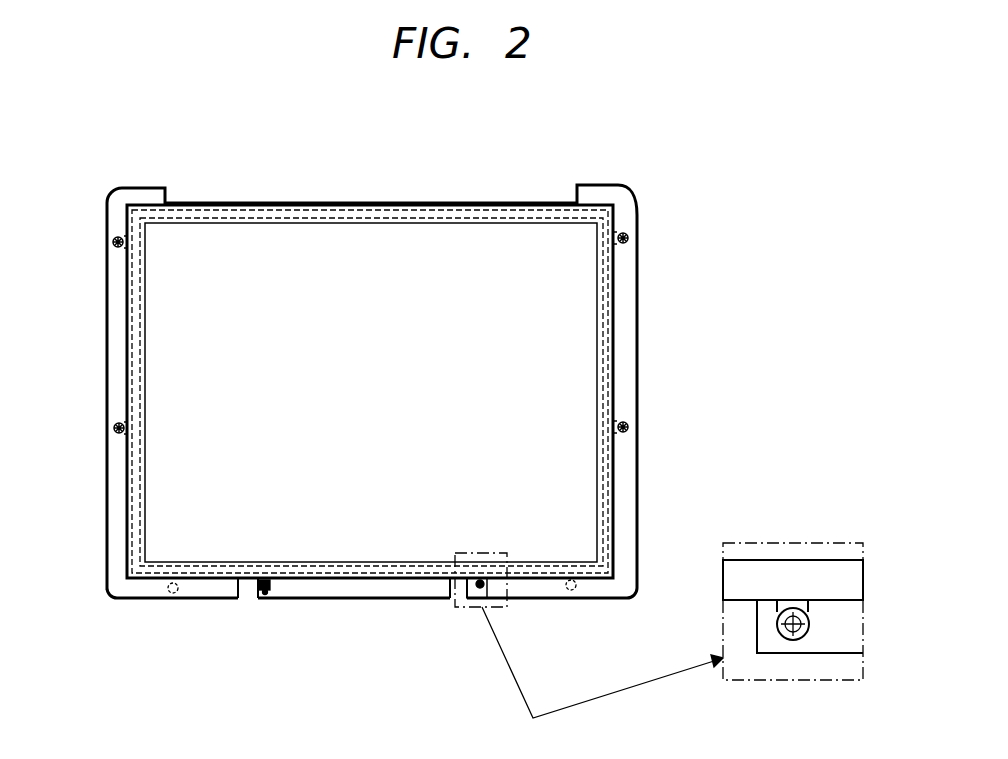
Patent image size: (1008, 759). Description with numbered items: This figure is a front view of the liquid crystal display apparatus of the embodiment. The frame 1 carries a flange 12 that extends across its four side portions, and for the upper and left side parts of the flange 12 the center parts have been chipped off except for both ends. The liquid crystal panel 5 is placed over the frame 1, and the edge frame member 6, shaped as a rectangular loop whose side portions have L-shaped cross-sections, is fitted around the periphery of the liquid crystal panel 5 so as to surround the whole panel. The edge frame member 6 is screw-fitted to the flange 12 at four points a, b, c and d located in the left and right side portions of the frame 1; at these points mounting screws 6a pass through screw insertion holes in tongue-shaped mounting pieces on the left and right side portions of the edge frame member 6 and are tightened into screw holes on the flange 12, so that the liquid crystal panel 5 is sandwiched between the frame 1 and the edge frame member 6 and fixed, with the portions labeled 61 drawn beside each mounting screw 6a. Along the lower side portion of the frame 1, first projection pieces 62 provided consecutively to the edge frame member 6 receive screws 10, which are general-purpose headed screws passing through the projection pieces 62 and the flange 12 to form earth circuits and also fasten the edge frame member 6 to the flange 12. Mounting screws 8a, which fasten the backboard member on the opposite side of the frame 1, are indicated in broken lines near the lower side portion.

The front frame 1 is at (638, 331).
The display panel 5 is at (155, 544).
The rear frame 6 is at (126, 563).
The fixing screw 6a is at (113, 242).
The screw holding portion 61 is at (121, 250).
The fixing tab 62 is at (270, 591).
The screw 10 is at (266, 600).
The lower frame member 12 is at (835, 655).
The mounting hole 8a is at (171, 596).
The corner position a is at (121, 234).
The corner position b is at (121, 440).
The corner position c is at (622, 441).
The corner position d is at (621, 233).